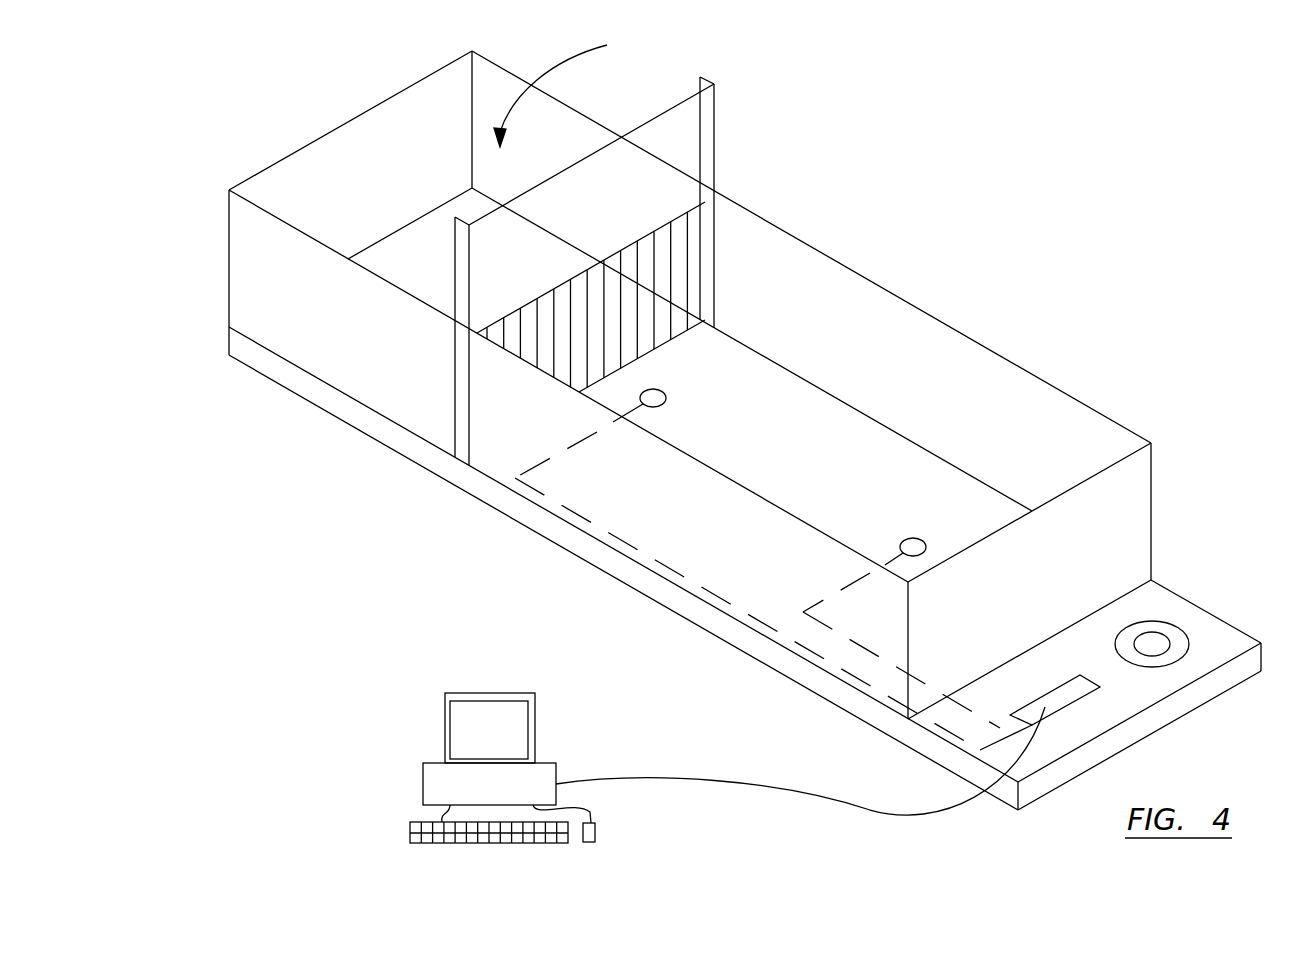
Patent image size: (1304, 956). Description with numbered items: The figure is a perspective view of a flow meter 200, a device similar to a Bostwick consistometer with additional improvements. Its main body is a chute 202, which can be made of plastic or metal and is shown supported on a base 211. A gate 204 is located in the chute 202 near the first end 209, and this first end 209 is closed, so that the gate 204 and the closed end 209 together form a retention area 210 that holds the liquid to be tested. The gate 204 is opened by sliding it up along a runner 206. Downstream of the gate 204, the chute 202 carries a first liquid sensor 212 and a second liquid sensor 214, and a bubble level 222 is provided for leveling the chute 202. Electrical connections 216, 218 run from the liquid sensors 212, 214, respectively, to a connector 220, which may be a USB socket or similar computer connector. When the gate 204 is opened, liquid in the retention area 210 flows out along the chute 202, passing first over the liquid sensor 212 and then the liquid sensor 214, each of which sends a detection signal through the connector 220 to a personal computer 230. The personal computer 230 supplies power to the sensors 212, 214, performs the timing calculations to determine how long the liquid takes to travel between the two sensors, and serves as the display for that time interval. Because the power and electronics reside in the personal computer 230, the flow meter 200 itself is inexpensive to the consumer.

The flow meter 200 is at (1194, 102).
The chute 202 is at (849, 332).
The gate 204 is at (682, 252).
The runner 206 is at (704, 124).
The first end 209 is at (398, 92).
The retention area 210 is at (595, 46).
The base plate 211 is at (363, 420).
The first liquid sensor 212 is at (663, 392).
The second liquid sensor 214 is at (913, 540).
The electrical connection 216 is at (583, 443).
The electrical connection 218 is at (837, 592).
The connector 220 is at (1063, 698).
The bubble level 222 is at (1166, 620).
The personal computer 230 is at (423, 787).